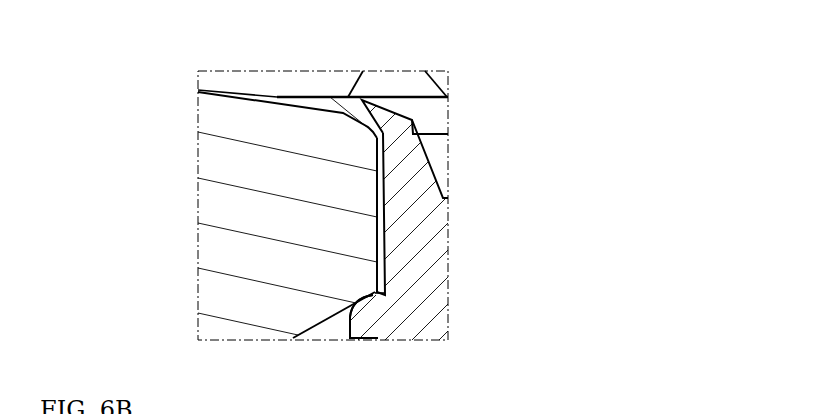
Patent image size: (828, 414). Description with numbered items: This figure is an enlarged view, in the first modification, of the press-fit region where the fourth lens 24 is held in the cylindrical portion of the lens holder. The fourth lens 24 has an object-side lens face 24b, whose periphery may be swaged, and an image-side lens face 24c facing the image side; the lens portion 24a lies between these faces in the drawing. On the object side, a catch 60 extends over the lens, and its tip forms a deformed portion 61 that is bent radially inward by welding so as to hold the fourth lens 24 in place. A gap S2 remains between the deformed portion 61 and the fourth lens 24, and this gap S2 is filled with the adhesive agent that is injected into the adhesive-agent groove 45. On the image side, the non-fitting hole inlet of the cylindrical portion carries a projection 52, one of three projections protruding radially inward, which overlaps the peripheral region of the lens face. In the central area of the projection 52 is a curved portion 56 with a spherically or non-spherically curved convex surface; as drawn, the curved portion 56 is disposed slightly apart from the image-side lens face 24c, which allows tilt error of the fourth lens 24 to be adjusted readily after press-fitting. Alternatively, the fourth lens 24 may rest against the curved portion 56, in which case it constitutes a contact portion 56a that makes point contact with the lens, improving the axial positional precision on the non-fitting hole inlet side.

The fourth lens 24 is at (206, 89).
The vertical wall portion 24a is at (383, 190).
The object-side lens face 24b is at (257, 95).
The image-side lens face 24c is at (314, 341).
The gap S2 is at (348, 110).
The deformed portion 61 is at (363, 72).
The catch 60 is at (411, 120).
The adhesive-agent groove 45 is at (449, 182).
The projection 52 is at (349, 342).
The contact portion 56a is at (360, 298).
The curved portion 56 is at (361, 306).